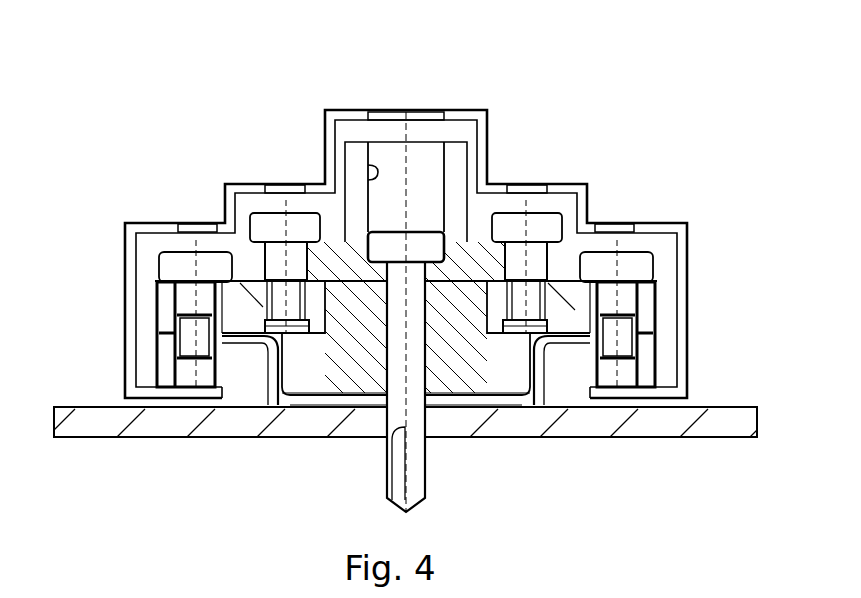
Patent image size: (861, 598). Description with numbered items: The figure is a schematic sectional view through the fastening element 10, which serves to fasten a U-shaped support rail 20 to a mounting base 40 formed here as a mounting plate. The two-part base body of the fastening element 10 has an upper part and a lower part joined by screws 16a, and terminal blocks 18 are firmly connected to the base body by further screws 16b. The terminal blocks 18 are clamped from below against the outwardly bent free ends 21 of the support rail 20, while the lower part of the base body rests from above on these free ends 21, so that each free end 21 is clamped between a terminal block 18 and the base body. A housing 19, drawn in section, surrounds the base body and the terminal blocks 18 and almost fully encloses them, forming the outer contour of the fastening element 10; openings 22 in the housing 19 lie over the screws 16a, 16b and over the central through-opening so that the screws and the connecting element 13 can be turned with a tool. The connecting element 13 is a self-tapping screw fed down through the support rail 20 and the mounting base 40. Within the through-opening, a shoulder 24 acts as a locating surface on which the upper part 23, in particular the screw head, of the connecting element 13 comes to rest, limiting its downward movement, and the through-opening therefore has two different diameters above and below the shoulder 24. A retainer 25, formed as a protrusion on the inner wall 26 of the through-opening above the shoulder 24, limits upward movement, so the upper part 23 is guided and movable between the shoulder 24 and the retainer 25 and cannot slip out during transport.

The fastening element 10 is at (578, 100).
The connecting element 13 is at (425, 468).
The screws 16a is at (270, 225).
The screws 16b is at (177, 267).
The terminal blocks 18 is at (250, 348).
The housing 19 is at (125, 285).
The support rail 20 is at (350, 398).
The free ends 21 is at (235, 370).
The openings 22 is at (417, 118).
The upper part 23 is at (397, 247).
The shoulder 24 is at (363, 263).
The retainer 25 is at (383, 173).
The inner wall 26 is at (437, 187).
The mounting base 40 is at (168, 423).